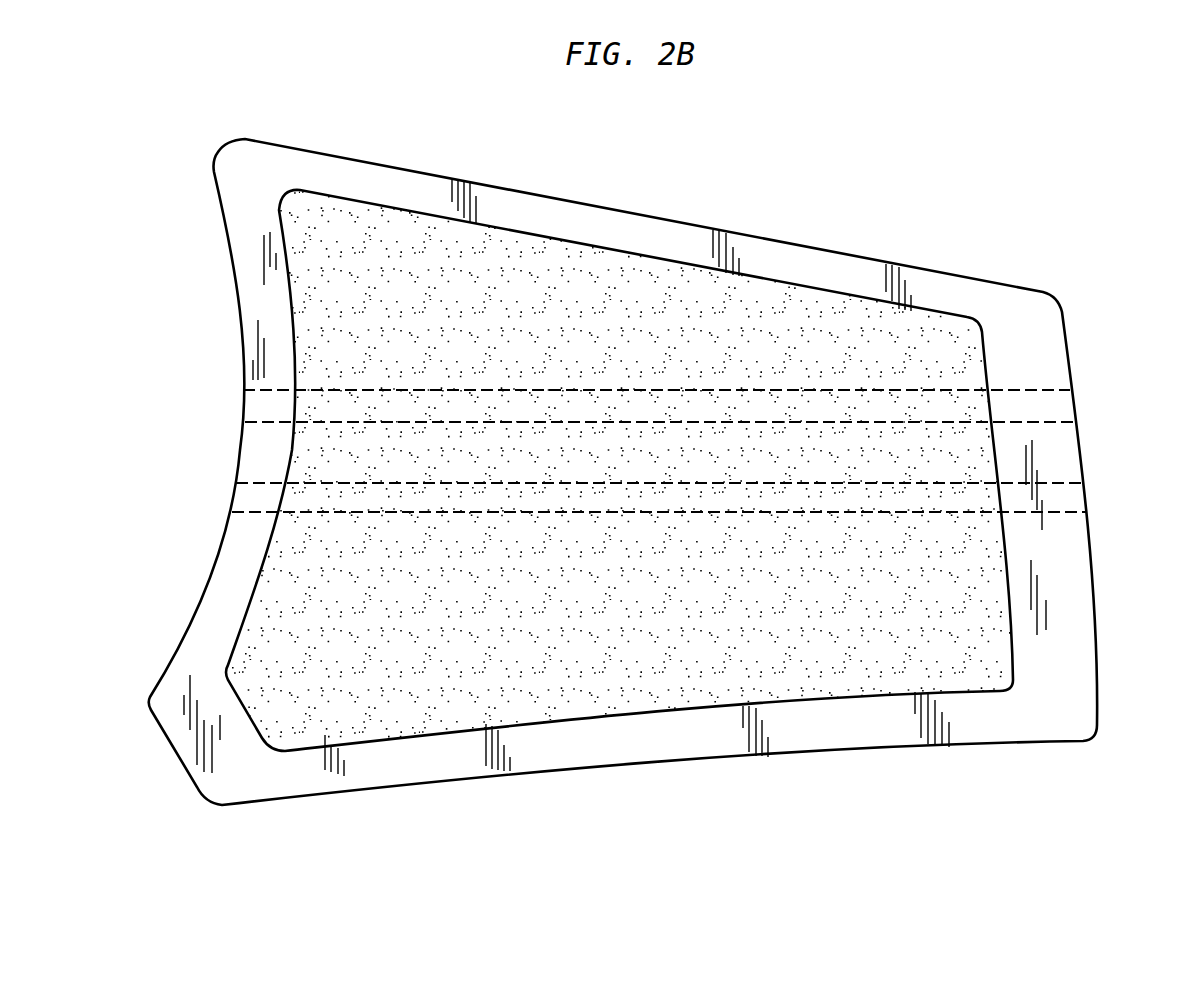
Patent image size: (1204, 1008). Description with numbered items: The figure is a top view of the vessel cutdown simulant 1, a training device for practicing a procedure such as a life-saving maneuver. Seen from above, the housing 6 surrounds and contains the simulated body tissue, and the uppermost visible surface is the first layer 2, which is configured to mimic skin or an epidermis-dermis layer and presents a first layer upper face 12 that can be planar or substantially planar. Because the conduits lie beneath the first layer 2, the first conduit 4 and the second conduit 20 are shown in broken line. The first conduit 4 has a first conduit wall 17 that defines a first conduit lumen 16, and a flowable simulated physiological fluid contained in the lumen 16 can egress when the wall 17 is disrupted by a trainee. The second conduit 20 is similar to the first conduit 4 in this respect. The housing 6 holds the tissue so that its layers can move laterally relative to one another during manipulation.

The vessel cutdown simulant 1 is at (668, 495).
The first layer 2 is at (619, 539).
The first layer upper face 12 is at (317, 707).
The first conduit 4 is at (418, 392).
The housing 6 is at (1033, 312).
The first conduit lumen 16 is at (786, 402).
The first conduit wall 17 is at (585, 390).
The second conduit 20 is at (835, 515).